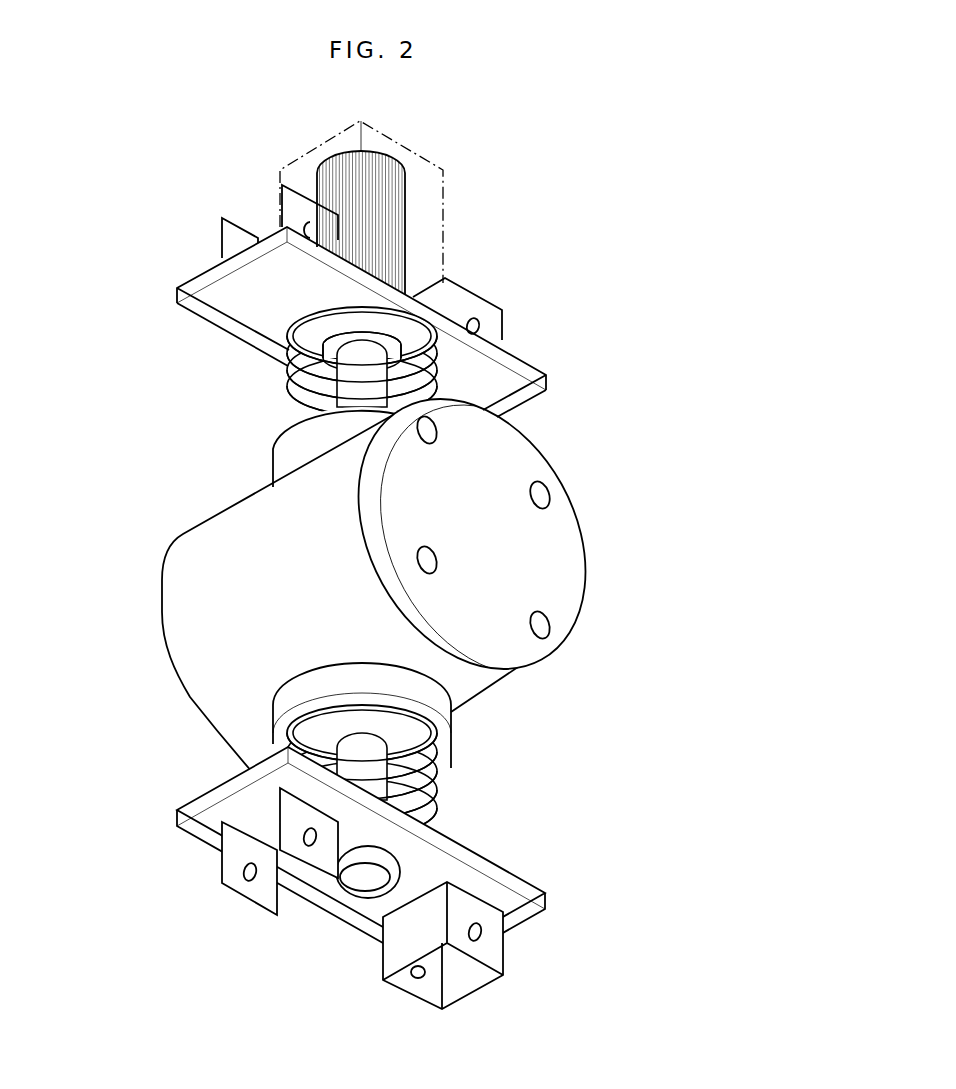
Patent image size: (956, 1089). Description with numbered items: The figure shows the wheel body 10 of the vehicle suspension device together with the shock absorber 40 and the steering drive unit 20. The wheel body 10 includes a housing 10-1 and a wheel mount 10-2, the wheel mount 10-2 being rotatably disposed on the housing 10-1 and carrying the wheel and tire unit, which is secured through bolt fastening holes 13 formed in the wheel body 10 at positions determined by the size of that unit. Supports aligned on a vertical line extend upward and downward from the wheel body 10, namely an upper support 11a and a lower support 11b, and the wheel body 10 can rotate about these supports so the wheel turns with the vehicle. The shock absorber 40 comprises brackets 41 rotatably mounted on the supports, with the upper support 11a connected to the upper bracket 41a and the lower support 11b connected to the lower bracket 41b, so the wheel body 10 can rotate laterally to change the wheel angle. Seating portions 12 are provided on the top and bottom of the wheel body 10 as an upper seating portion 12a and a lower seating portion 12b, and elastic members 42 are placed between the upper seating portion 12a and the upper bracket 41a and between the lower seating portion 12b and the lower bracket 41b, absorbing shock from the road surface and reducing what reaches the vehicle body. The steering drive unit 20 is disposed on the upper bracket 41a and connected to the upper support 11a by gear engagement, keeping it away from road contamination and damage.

The wheel body 10 is at (373, 566).
The housing 10-1 is at (187, 623).
The wheel mount 10-2 is at (550, 551).
The upper support 11a is at (350, 370).
The lower support 11b is at (372, 768).
The seating portions 12 is at (365, 587).
The upper seating portion 12a is at (283, 452).
The lower seating portion 12b is at (445, 720).
The bolt fastening holes 13 is at (543, 497).
The steering drive unit 20 is at (444, 183).
The shock absorber 40 is at (376, 599).
The brackets 41 is at (415, 599).
The upper bracket 41a is at (507, 357).
The lower bracket 41b is at (350, 908).
The elastic members 42 is at (433, 372).